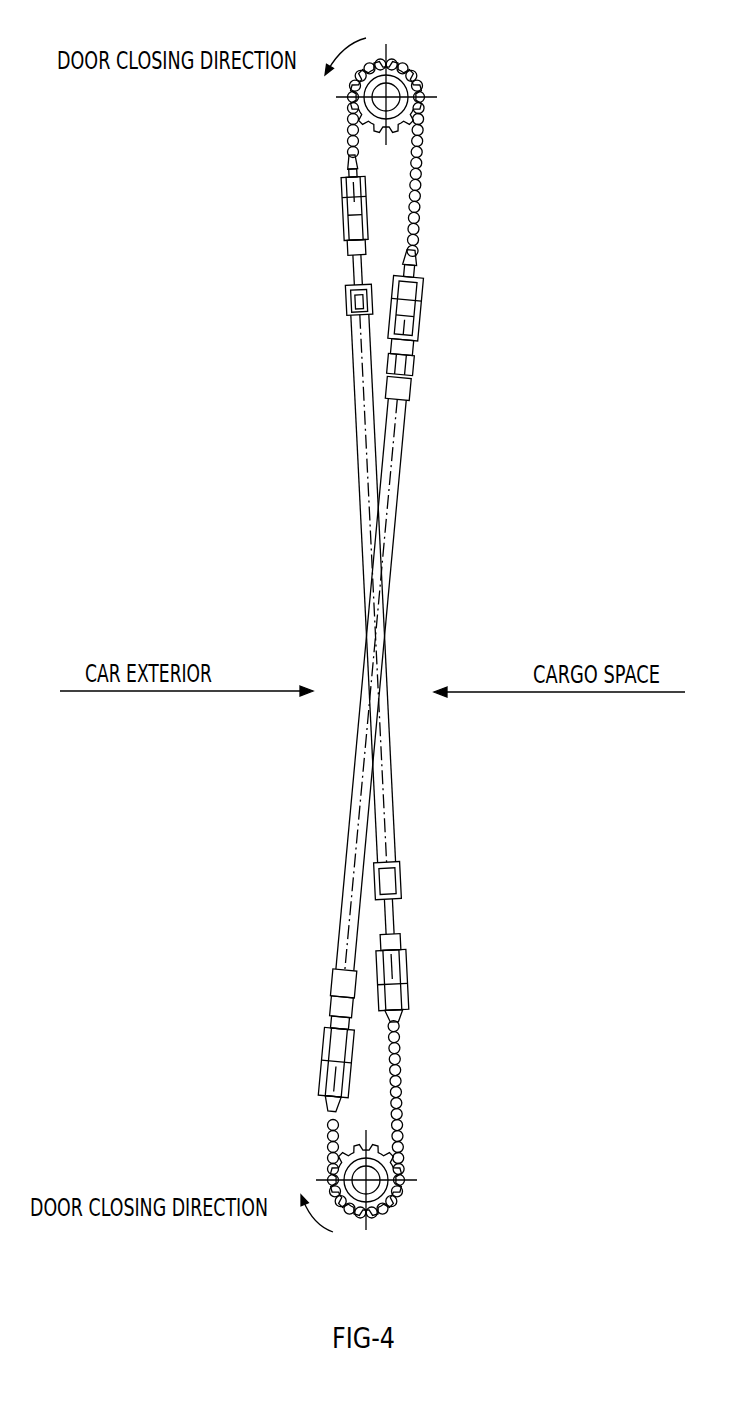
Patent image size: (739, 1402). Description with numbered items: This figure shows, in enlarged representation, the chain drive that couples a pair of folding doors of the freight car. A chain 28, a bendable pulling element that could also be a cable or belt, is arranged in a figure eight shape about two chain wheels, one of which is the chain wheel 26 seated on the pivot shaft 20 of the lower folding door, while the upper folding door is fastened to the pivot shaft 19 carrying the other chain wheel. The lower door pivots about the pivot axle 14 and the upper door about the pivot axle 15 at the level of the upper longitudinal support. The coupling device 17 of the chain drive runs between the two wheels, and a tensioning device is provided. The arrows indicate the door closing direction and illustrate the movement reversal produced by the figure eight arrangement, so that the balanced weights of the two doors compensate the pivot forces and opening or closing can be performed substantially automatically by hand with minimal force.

The pivot axle 14 is at (368, 1183).
The pivot axle 15 is at (400, 95).
The chain drive element 17 is at (392, 473).
The pivot shaft 19 is at (410, 72).
The pivot shaft 20 is at (396, 1192).
The chain wheel 26 is at (355, 1208).
The chain 28 is at (420, 182).